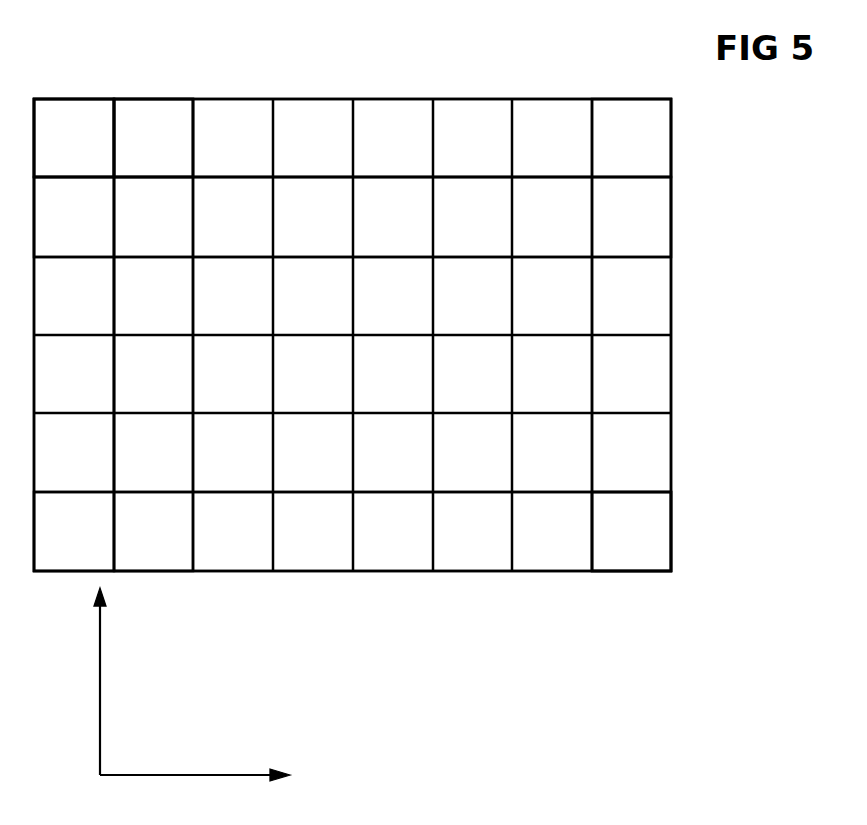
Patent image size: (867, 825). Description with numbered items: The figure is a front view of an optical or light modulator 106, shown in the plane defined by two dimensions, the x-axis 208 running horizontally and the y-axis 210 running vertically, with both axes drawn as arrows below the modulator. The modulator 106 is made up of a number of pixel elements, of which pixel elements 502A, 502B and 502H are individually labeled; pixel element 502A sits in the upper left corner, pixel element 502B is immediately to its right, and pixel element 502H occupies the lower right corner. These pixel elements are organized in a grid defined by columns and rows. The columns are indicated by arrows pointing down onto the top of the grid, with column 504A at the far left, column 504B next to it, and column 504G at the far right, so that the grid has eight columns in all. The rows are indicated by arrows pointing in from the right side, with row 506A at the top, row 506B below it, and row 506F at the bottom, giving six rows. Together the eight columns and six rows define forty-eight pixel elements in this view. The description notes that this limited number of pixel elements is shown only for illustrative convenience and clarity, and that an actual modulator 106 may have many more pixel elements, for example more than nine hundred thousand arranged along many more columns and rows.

The modulator 106 is at (680, 614).
The x-axis 208 is at (250, 733).
The y-axis 210 is at (100, 617).
The pixel element 502A is at (99, 151).
The pixel element 502B is at (178, 151).
The pixel element 502H is at (657, 541).
The column 504A is at (75, 82).
The column 504B is at (152, 82).
The column 504G is at (629, 80).
The row 506A is at (700, 137).
The row 506B is at (700, 215).
The row 506F is at (700, 530).